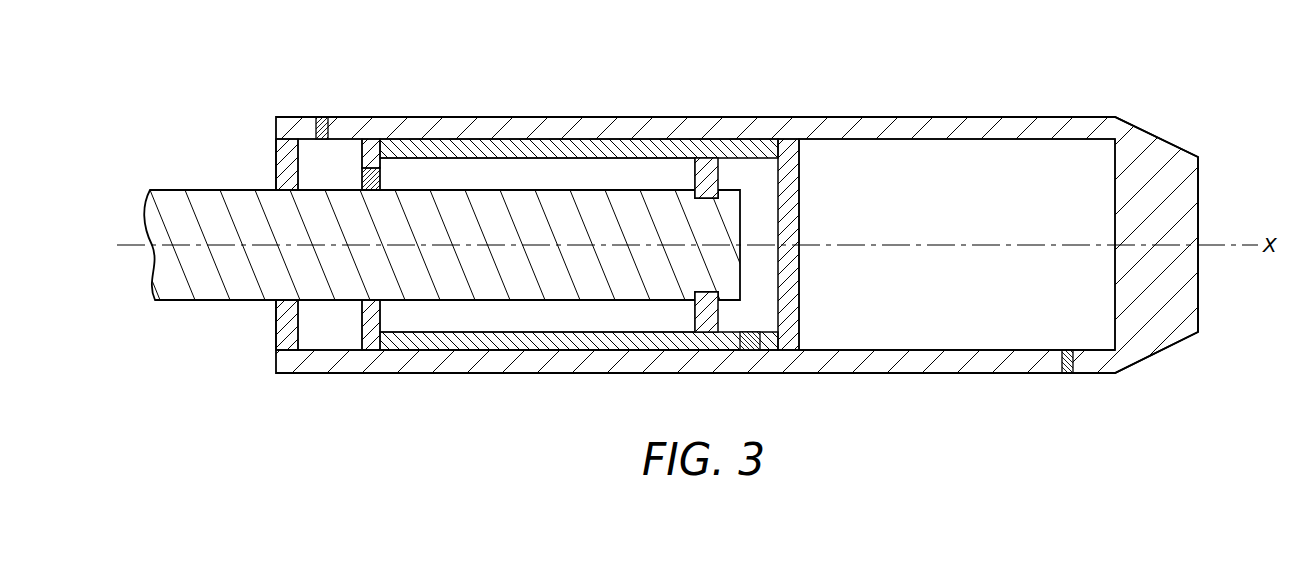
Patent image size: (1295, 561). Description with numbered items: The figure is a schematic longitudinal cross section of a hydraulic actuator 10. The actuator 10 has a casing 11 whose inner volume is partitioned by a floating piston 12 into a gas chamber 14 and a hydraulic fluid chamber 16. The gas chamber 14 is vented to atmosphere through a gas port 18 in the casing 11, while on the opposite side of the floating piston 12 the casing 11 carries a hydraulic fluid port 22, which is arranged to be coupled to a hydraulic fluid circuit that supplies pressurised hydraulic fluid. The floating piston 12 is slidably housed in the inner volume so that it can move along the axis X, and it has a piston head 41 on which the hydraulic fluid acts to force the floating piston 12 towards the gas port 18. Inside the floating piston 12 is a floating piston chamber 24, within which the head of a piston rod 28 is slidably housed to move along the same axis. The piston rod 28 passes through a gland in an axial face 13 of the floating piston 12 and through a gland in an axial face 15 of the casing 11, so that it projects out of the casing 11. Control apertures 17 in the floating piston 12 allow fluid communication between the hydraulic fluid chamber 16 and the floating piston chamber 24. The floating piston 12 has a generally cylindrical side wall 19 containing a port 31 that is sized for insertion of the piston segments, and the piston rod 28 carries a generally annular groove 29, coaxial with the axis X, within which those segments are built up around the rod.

The actuator 10 is at (1157, 70).
The casing 11 is at (501, 114).
The floating piston 12 is at (619, 212).
The axial face of the floating piston 13 is at (372, 320).
The gas chamber 14 is at (980, 170).
The axial face of the casing 15 is at (282, 337).
The hydraulic fluid chamber 16 is at (312, 338).
The control apertures 17 is at (362, 179).
The gas port 18 is at (1068, 375).
The cylindrical side wall of the floating piston 19 is at (503, 343).
The hydraulic fluid port 22 is at (321, 117).
The floating piston chamber 24 is at (637, 175).
The piston rod 28 is at (170, 197).
The annular groove 29 is at (704, 200).
The port 31 is at (753, 350).
The piston head 41 is at (799, 270).